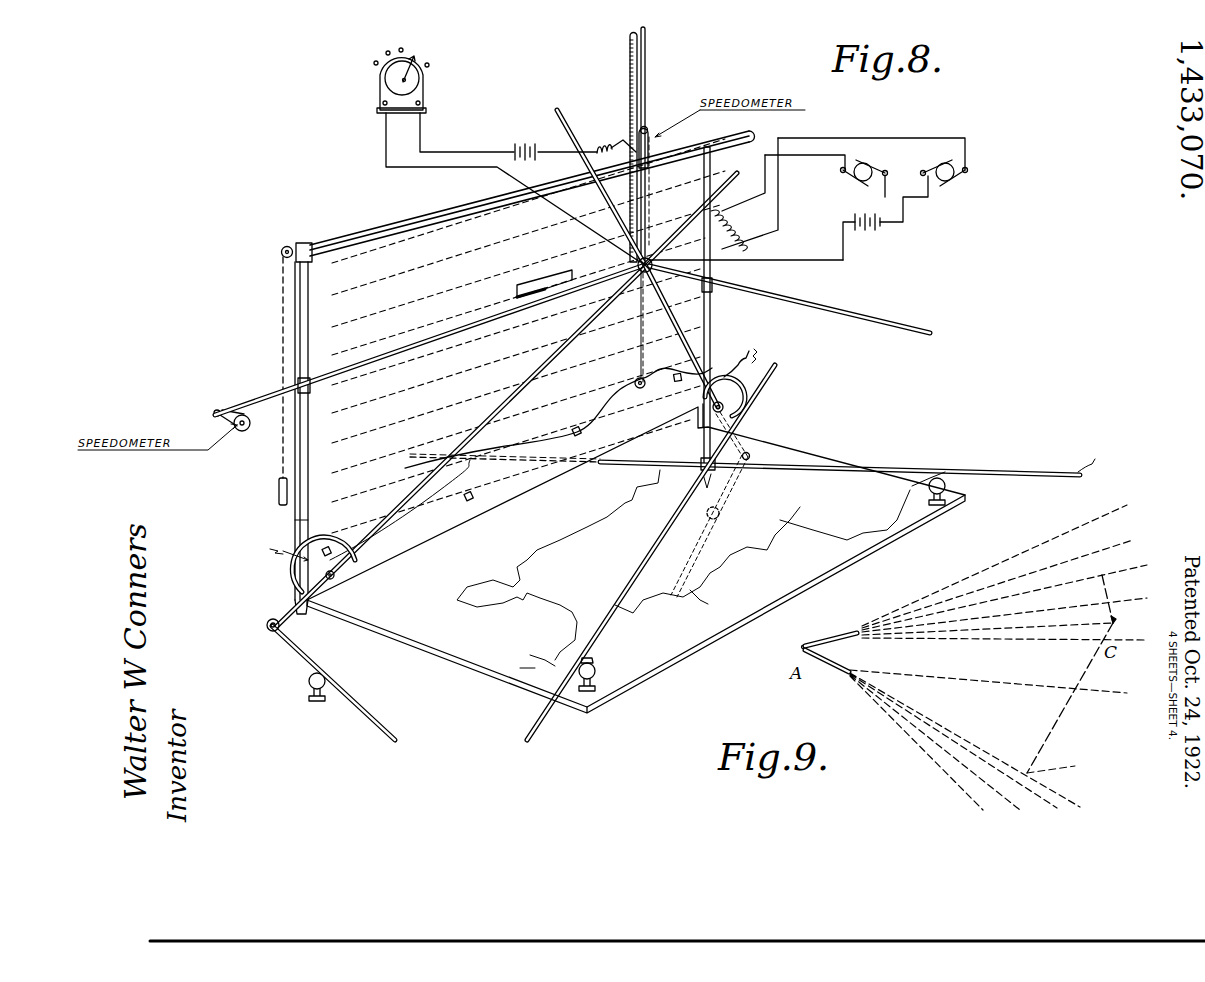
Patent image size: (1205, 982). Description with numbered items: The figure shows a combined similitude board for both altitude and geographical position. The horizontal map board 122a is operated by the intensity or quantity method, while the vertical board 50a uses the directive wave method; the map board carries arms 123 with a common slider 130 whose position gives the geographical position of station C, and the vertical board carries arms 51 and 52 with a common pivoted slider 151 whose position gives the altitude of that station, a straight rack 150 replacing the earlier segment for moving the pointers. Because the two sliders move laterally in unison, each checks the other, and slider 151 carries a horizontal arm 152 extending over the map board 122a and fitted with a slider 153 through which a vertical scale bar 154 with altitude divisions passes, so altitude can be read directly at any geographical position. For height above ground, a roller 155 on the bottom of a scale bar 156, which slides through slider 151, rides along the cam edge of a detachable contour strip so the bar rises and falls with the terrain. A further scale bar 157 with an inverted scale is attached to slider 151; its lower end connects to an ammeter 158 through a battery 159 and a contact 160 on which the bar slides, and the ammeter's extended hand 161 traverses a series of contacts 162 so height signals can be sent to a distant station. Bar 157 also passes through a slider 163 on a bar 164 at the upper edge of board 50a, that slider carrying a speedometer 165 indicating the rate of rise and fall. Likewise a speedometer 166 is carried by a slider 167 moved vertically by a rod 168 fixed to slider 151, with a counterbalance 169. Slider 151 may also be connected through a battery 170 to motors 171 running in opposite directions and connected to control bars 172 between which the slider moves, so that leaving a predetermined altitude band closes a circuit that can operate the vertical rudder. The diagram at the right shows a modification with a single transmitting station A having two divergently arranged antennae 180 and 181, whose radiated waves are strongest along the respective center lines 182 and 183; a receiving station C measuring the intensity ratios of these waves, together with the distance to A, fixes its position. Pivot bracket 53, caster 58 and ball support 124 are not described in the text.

In FIG. 8, the similitude board 50a is at (297, 523).
In FIG. 8, the arm 51 is at (505, 402).
In FIG. 8, the arm 52 is at (686, 346).
In FIG. 8, the pivot bracket 53 is at (307, 562).
In FIG. 8, the ball caster support 58 is at (310, 689).
In FIG. 8, the map board 122a is at (668, 661).
In FIG. 8, the arms 123 is at (618, 610).
In FIG. 8, the ball support 124 is at (602, 686).
In FIG. 8, the slider 130 is at (700, 470).
In FIG. 8, the straight rack 150 is at (352, 693).
In FIG. 8, the pivoted slider 151 is at (720, 247).
In FIG. 8, the horizontal arm 152 is at (770, 296).
In FIG. 8, the slider 153 is at (714, 280).
In FIG. 8, the vertical scale bar 154 is at (680, 451).
In FIG. 8, the roller 155 is at (635, 383).
In FIG. 8, the scale bar 156 is at (640, 353).
In FIG. 8, the scale bar 157 is at (631, 103).
In FIG. 8, the ammeter 158 is at (424, 96).
In FIG. 8, the battery 159 is at (533, 141).
In FIG. 8, the contact 160 is at (597, 158).
In FIG. 8, the extended hand 161 is at (426, 58).
In FIG. 8, the contacts 162 is at (385, 54).
In FIG. 8, the slider 163 is at (650, 153).
In FIG. 8, the bar 164 is at (458, 220).
In FIG. 8, the speedometer 165 is at (655, 140).
In FIG. 8, the speedometer 166 is at (238, 408).
In FIG. 8, the slider 167 is at (300, 385).
In FIG. 8, the rod 168 is at (451, 331).
In FIG. 8, the counterbalance 169 is at (279, 496).
In FIG. 8, the battery 170 is at (871, 232).
In FIG. 8, the motors 171 is at (860, 182).
In FIG. 8, the control bars 172 is at (561, 283).
In FIG. 9, the antenna 180 is at (838, 639).
In FIG. 9, the antenna 181 is at (818, 670).
In FIG. 9, the center line 182 is at (1102, 577).
In FIG. 9, the center line 183 is at (1038, 771).